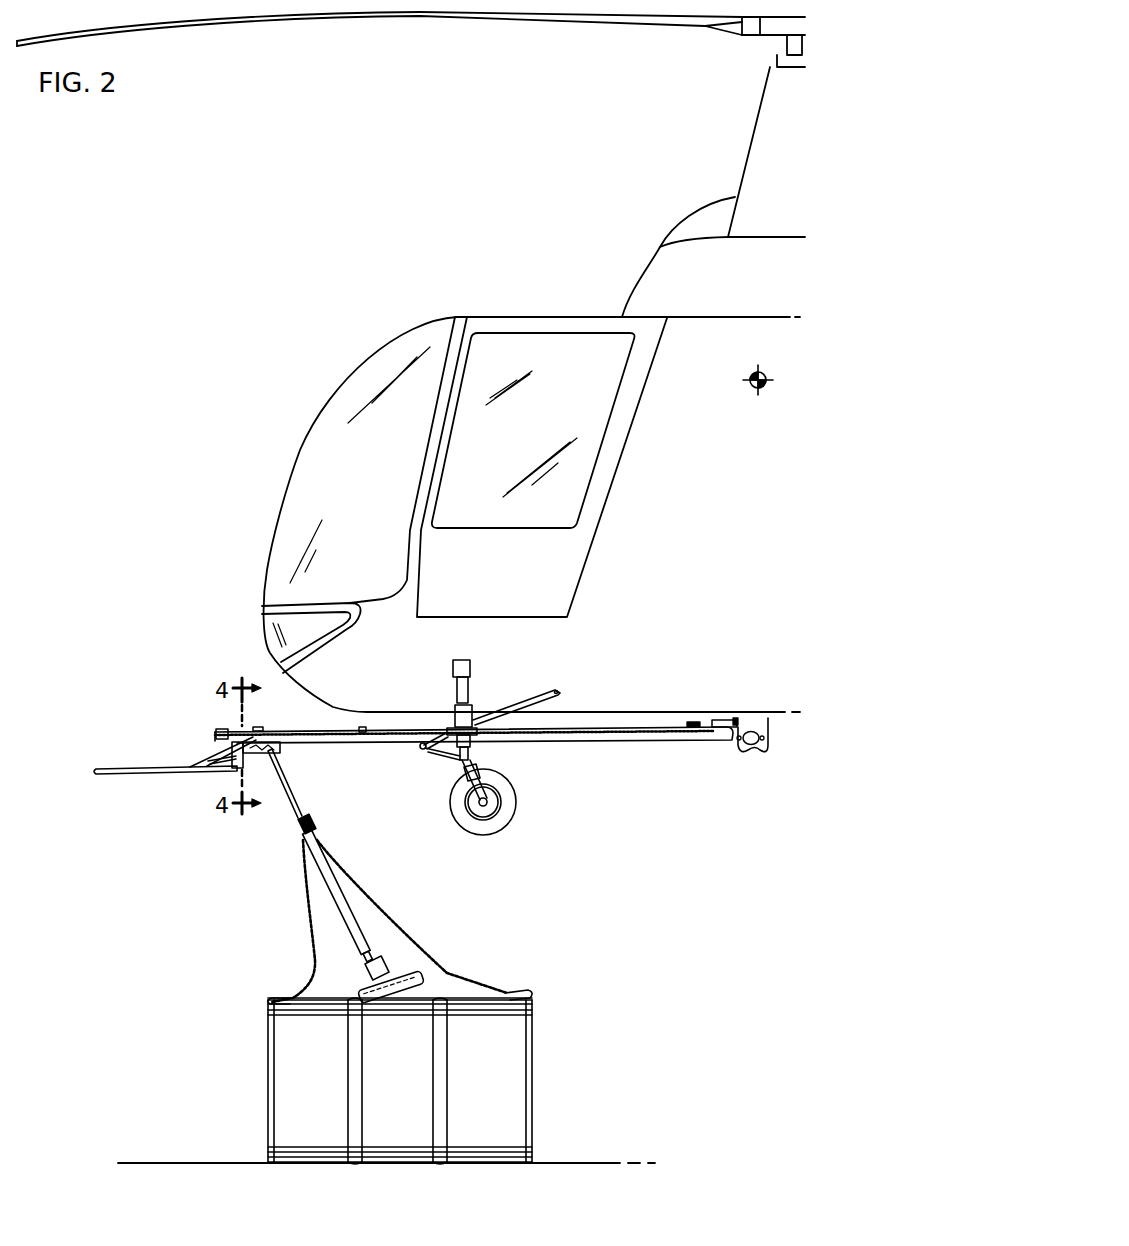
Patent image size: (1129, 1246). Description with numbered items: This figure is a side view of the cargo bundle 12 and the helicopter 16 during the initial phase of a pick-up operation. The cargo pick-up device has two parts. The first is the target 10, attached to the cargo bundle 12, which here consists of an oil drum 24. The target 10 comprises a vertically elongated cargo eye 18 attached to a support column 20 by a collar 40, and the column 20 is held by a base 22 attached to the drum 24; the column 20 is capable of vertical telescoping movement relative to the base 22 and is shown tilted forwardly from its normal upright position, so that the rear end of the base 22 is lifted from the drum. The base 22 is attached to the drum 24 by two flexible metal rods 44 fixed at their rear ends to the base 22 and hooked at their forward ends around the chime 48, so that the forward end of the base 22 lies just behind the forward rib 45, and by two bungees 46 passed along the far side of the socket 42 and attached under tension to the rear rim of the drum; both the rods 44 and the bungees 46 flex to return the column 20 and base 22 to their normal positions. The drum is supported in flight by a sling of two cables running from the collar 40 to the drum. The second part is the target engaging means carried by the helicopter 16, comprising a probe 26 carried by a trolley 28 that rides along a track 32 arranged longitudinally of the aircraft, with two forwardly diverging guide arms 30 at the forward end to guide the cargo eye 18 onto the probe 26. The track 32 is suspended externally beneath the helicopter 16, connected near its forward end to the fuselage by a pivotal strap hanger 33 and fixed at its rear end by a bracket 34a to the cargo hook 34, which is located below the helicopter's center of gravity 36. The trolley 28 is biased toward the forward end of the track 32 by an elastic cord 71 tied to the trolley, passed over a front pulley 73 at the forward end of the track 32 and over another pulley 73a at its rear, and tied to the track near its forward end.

The target 10 is at (356, 858).
The cargo bundle 12 is at (543, 1039).
The helicopter 16 is at (248, 437).
The cargo eye 18 is at (300, 795).
The support column 20 is at (363, 938).
The base 22 is at (412, 995).
The oil drum 24 is at (408, 1109).
The probe 26 is at (216, 758).
The trolley 28 is at (273, 755).
The guide arm 30 is at (112, 769).
The track 32 is at (226, 731).
The strap hanger 33 is at (362, 714).
The cargo hook 34 is at (758, 760).
The bracket 34a is at (723, 719).
The center of gravity 36 is at (767, 395).
The collar 40 is at (314, 823).
The socket 42 is at (372, 973).
The flexible metal rod 44 is at (287, 1000).
The forward rib 45 is at (352, 1123).
The bungee 46 is at (494, 987).
The chime 48 is at (268, 1033).
The bungee 71 is at (618, 732).
The front pulley 73 is at (217, 733).
The pulley 73a is at (693, 721).